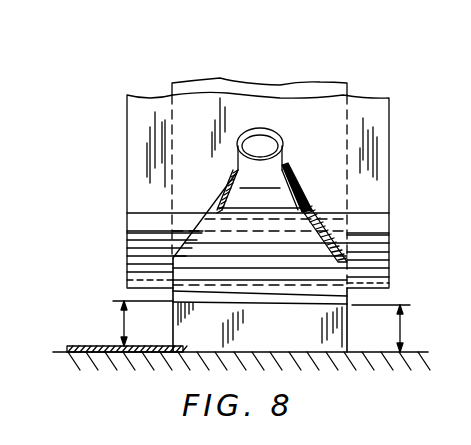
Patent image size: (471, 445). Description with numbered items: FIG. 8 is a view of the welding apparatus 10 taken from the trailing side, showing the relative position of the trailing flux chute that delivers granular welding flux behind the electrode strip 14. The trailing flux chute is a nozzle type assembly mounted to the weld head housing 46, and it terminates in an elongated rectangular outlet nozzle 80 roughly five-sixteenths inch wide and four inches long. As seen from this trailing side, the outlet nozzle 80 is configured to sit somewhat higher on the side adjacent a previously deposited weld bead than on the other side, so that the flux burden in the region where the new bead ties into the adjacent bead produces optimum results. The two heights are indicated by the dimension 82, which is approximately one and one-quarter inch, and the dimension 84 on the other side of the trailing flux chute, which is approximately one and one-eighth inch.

The gas cleaning apparatus 10 is at (62, 351).
The electrode strip 14 is at (338, 337).
The weld head housing 46 is at (132, 115).
The outlet nozzle 80 is at (253, 303).
The dimension 82 is at (122, 323).
The dimension 84 is at (402, 330).